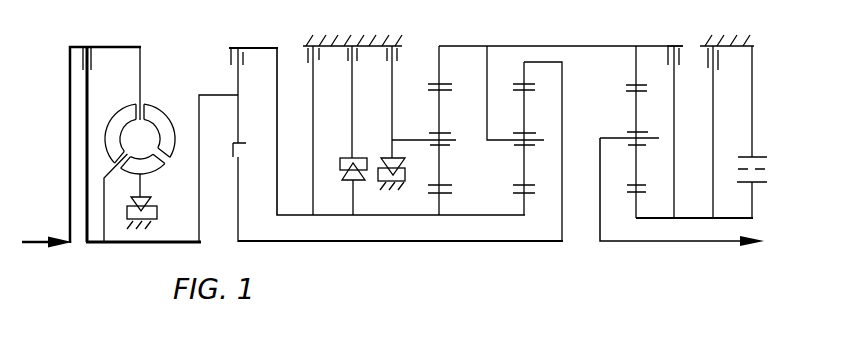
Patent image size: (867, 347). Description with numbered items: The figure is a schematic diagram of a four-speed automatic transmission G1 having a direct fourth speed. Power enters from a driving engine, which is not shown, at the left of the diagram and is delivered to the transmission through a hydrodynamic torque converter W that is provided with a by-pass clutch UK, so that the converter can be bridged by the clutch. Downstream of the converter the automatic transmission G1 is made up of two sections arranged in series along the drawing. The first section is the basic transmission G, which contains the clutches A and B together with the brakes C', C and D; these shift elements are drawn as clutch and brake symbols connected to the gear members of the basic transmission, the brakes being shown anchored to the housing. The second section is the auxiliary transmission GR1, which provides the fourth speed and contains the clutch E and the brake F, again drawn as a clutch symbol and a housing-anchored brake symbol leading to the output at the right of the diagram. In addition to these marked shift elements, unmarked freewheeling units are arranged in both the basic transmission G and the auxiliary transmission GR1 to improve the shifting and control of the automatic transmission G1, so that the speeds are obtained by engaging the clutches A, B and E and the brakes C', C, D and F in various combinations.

The by-pass clutch Uk is at (130, 147).
The hydrodynamic torque converter W is at (162, 98).
The clutch B is at (253, 81).
The clutch A is at (247, 180).
The brake C' is at (306, 130).
The brake C is at (349, 130).
The brake D is at (415, 118).
The basic transmission G is at (378, 250).
The automatic transmission G1 is at (610, 34).
The clutch E is at (675, 121).
The brake F is at (727, 126).
The auxiliary transmission GR1 is at (642, 254).